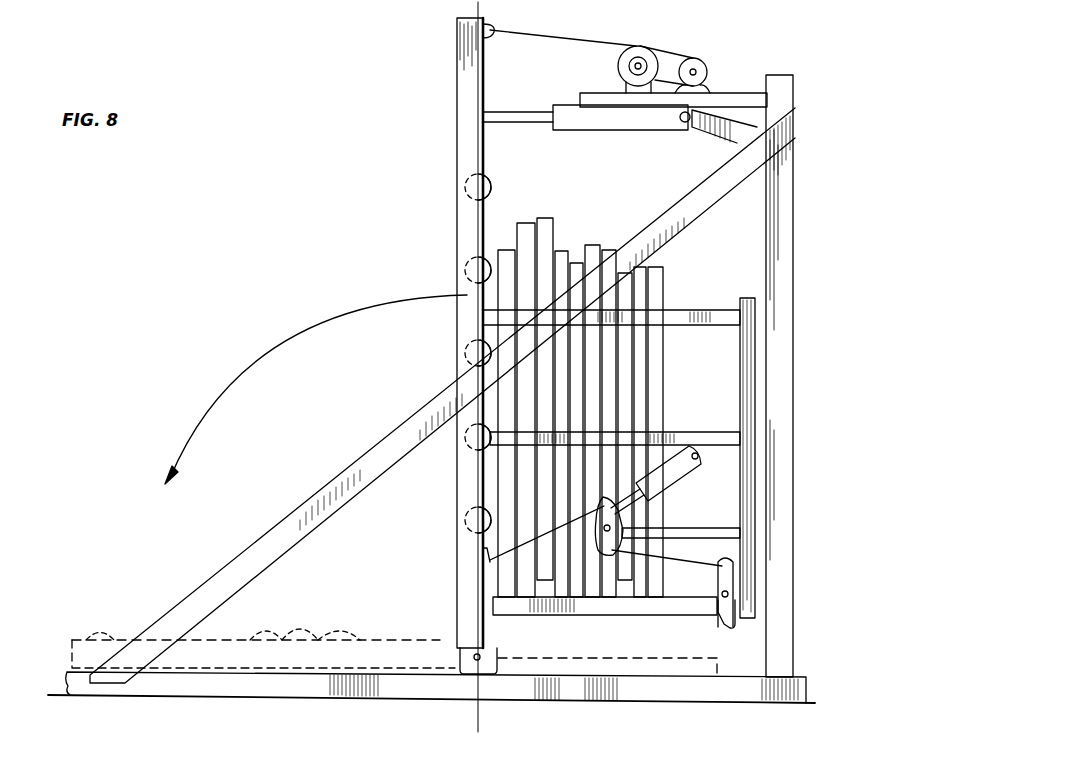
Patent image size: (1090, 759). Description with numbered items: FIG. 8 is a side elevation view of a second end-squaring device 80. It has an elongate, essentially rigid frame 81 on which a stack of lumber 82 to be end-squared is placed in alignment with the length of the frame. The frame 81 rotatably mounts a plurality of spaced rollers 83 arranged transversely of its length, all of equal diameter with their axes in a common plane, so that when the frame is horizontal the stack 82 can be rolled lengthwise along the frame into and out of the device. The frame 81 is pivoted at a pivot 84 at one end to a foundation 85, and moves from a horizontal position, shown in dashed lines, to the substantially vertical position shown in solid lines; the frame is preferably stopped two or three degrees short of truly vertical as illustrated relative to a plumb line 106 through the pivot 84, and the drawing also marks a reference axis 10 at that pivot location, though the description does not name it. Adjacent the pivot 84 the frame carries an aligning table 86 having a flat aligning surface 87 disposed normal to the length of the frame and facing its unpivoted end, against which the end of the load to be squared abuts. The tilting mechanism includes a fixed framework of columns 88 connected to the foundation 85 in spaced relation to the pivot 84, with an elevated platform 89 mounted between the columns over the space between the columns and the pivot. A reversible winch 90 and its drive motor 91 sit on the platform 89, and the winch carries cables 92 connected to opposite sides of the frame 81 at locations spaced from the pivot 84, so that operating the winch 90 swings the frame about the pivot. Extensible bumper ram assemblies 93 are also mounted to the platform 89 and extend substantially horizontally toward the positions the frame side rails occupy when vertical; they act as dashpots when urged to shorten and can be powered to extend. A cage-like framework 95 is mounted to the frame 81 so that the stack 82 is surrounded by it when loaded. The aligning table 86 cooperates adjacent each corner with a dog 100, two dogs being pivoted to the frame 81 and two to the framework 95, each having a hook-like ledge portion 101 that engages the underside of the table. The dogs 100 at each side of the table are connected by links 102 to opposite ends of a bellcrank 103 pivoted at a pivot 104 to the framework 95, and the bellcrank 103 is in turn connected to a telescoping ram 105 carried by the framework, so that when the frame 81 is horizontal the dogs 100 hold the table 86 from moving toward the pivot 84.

The hinge axis 10 is at (476, 368).
The end-squaring device 80 is at (395, 208).
The frame 81 is at (84, 634).
The stack of lumber 82 is at (664, 386).
The rollers 83 is at (492, 192).
The pivot 84 is at (470, 665).
The foundation 85 is at (228, 688).
The aligning table 86 is at (604, 606).
The aligning surface 87 is at (650, 594).
The columns 88 is at (783, 500).
The elevated platform 89 is at (748, 92).
The reversible winch 90 is at (642, 47).
The drive motor 91 is at (712, 58).
The cables 92 is at (545, 38).
The bumper ram assemblies 93 is at (620, 130).
The cage-like framework 95 is at (714, 306).
The dog 100 is at (485, 560).
The hook-like ledge portion 101 is at (497, 620).
The links 102 is at (480, 547).
The bellcrank 103 is at (620, 505).
The pivot 104 is at (655, 546).
The telescoping ram 105 is at (684, 468).
The plumb line 106 is at (457, 149).